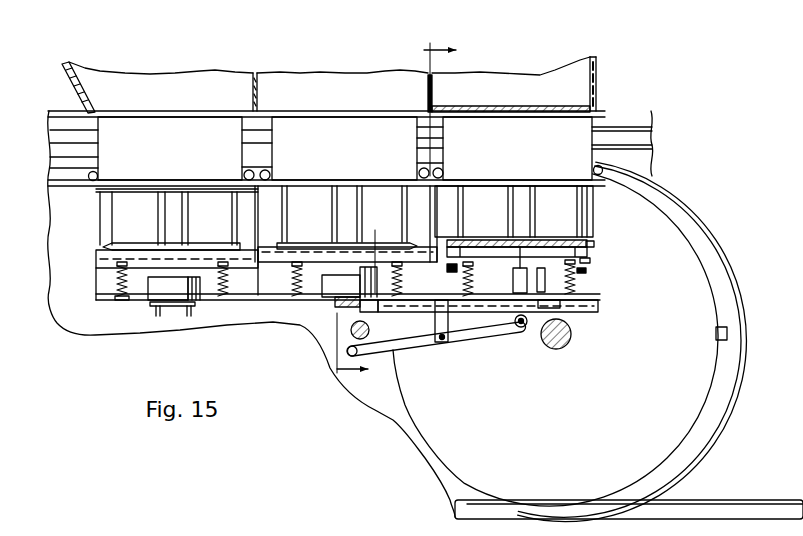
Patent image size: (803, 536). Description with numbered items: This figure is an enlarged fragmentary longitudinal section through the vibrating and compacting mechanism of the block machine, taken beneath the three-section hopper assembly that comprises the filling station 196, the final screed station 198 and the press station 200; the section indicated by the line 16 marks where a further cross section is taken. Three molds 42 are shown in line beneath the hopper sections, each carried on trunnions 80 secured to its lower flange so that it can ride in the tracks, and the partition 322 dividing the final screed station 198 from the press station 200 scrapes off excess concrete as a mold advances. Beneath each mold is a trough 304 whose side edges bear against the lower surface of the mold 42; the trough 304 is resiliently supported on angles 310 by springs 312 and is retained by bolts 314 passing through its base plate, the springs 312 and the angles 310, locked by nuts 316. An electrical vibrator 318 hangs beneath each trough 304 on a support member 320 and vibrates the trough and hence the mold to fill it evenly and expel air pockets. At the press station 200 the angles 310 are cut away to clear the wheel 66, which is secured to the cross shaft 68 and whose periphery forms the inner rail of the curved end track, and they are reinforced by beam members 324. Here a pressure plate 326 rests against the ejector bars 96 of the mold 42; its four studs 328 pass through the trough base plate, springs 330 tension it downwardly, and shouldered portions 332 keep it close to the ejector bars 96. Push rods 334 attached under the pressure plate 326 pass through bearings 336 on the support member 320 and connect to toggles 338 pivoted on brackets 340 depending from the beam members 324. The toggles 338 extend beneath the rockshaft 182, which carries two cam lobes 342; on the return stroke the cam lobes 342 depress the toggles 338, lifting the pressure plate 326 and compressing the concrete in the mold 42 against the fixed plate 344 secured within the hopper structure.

The section line 16- 16 is at (409, 210).
The mold 42 is at (207, 141).
The wheel 66 is at (413, 422).
The cross shaft 68 is at (556, 349).
The trunnion 80 is at (244, 174).
The ejector bar 96 is at (199, 243).
The rockshaft 182 is at (348, 338).
The filling station 196 is at (157, 110).
The final screed station 198 is at (336, 110).
The press station 200 is at (535, 87).
The trough 304 is at (105, 242).
The angle 310 is at (99, 300).
The spring 312 is at (116, 281).
The bolt 314 is at (120, 302).
The nut 316 is at (123, 262).
The electrical vibrator 318 is at (162, 290).
The support member 320 is at (173, 306).
The partition 322 is at (427, 95).
The beam member 324 is at (594, 310).
The pressure plate 326 is at (594, 243).
The stud 328 is at (582, 275).
The spring 330 is at (587, 264).
The shouldered portion 332 is at (575, 247).
The push rod 334 is at (530, 326).
The bearing 336 is at (513, 282).
The toggle 338 is at (465, 339).
The bracket 340 is at (436, 322).
The cam lobe 342 is at (392, 347).
The fixed plate 344 is at (492, 111).